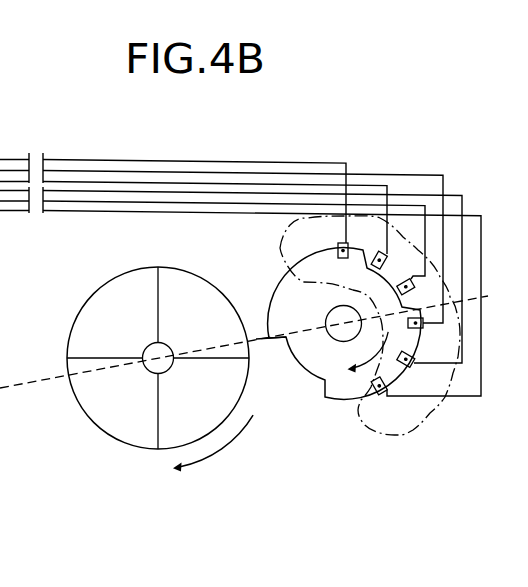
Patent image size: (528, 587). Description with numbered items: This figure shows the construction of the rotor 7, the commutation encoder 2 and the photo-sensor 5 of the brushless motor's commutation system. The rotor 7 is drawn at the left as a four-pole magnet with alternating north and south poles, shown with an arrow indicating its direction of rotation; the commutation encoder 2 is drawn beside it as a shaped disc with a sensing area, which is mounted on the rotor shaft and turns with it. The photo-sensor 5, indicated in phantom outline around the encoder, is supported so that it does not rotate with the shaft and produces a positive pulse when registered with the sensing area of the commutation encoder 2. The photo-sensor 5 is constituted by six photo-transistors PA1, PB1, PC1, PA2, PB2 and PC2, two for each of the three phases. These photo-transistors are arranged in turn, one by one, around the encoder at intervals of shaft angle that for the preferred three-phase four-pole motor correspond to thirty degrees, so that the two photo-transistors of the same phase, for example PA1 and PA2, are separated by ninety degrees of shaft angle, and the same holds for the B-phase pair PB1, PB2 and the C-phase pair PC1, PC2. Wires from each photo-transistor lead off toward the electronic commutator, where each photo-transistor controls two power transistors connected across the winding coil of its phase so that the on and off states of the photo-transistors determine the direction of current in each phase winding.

The commutation encoder 2 is at (342, 400).
The photo-sensor 5 is at (410, 437).
The rotor magnet 7 is at (129, 448).
The photo-transistor PA1 is at (325, 240).
The photo-transistor PB1 is at (370, 246).
The photo-transistor PC1 is at (407, 275).
The photo-transistor PA2 is at (432, 337).
The photo-transistor PB2 is at (421, 372).
The photo-transistor PC2 is at (392, 401).